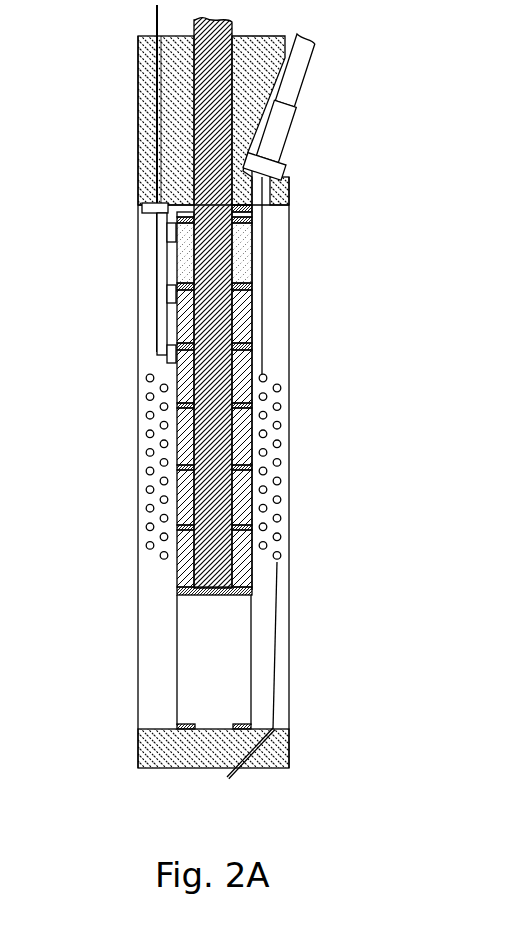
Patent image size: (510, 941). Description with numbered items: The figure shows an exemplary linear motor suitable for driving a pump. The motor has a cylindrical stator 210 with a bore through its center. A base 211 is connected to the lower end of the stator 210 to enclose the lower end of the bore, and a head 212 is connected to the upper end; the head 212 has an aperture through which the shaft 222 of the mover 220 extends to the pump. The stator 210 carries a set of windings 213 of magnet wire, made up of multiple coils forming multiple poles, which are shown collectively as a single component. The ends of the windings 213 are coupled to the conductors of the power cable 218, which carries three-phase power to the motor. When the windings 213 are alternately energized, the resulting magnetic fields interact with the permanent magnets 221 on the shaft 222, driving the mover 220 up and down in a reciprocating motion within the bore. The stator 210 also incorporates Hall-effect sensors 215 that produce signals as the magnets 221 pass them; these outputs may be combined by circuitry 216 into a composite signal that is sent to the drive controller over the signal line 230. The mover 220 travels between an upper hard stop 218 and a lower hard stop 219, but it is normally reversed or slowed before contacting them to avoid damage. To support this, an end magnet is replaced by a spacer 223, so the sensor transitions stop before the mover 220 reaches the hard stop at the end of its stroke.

The stator 210 is at (289, 268).
The base 211 is at (289, 748).
The head 212 is at (138, 88).
The windings 213 is at (300, 373).
The Hall-effect sensors 215 is at (168, 300).
The circuitry 216 is at (142, 208).
The power cable 218 is at (311, 126).
The lower hard stop 219 is at (195, 727).
The mover 220 is at (250, 590).
The permanent magnets 221 is at (252, 326).
The shaft 222 is at (240, 352).
The spacer 223 is at (252, 278).
The signal line 230 is at (157, 24).